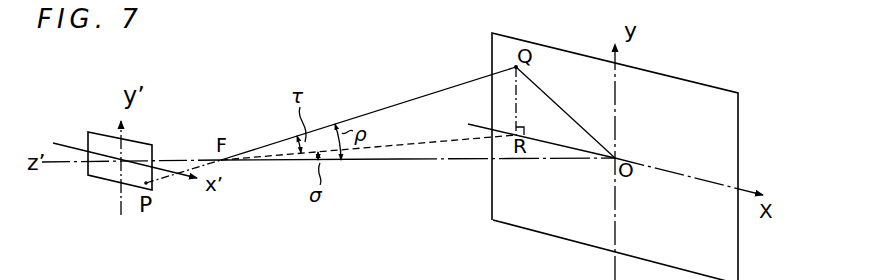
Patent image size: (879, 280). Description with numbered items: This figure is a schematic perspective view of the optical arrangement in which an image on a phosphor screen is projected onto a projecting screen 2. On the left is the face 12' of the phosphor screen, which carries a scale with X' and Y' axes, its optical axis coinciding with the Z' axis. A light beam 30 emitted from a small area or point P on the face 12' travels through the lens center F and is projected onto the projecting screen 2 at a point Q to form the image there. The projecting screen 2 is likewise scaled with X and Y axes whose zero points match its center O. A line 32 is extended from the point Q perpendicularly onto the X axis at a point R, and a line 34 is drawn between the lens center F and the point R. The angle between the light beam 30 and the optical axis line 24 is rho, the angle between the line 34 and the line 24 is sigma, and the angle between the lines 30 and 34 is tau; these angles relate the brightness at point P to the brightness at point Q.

The projecting screen 2 is at (682, 92).
The face of the phosphor screen 12' is at (102, 187).
The optical axis line 24 is at (430, 162).
The light beam 30 is at (410, 98).
The perpendicular line from point Q to the X axis 32 is at (519, 104).
The line between lens center F and point R 34 is at (397, 143).